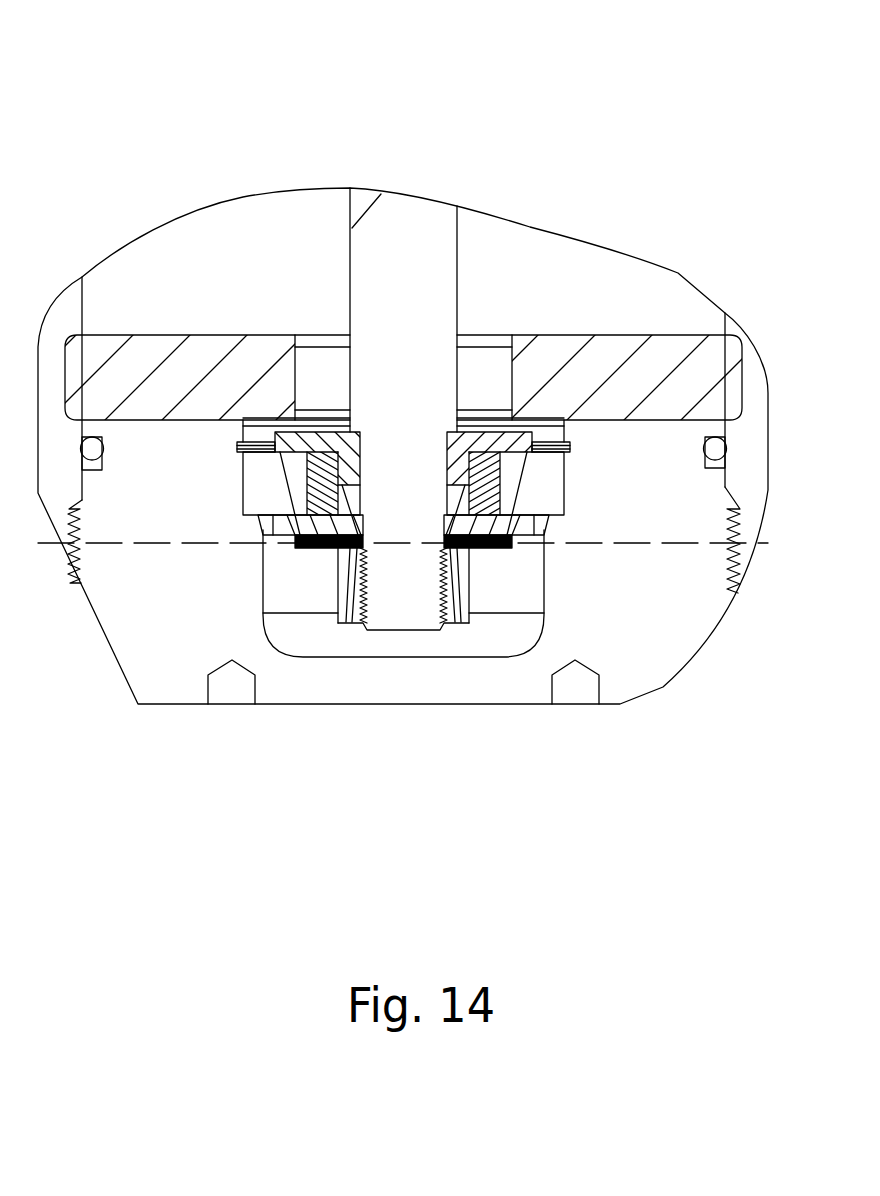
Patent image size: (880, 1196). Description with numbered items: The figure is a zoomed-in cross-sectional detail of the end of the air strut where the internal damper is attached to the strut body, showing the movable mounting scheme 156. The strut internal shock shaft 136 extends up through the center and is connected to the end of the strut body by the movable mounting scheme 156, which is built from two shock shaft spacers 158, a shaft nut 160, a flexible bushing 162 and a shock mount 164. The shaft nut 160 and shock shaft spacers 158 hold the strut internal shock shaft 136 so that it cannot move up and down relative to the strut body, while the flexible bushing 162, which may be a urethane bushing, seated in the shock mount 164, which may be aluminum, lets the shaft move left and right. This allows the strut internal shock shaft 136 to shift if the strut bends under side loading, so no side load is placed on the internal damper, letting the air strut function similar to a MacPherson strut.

The strut internal shock shaft 136 is at (402, 524).
The movable mounting scheme 156 is at (204, 137).
The shock shaft spacers 158 is at (293, 440).
The shaft nut 160 is at (501, 670).
The flexible bushing 162 is at (543, 520).
The shock mount 164 is at (547, 437).